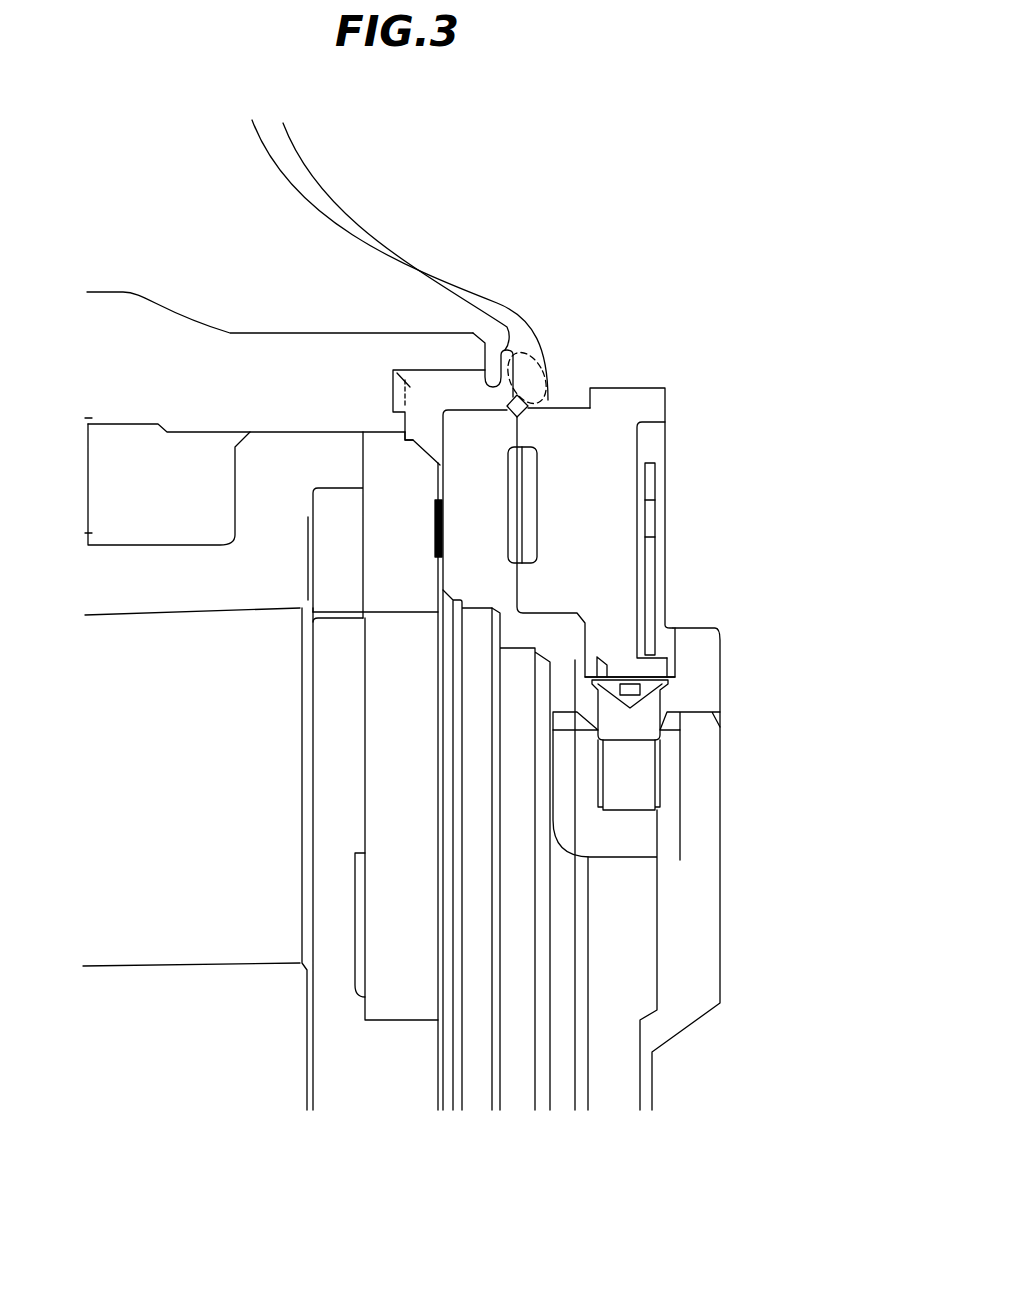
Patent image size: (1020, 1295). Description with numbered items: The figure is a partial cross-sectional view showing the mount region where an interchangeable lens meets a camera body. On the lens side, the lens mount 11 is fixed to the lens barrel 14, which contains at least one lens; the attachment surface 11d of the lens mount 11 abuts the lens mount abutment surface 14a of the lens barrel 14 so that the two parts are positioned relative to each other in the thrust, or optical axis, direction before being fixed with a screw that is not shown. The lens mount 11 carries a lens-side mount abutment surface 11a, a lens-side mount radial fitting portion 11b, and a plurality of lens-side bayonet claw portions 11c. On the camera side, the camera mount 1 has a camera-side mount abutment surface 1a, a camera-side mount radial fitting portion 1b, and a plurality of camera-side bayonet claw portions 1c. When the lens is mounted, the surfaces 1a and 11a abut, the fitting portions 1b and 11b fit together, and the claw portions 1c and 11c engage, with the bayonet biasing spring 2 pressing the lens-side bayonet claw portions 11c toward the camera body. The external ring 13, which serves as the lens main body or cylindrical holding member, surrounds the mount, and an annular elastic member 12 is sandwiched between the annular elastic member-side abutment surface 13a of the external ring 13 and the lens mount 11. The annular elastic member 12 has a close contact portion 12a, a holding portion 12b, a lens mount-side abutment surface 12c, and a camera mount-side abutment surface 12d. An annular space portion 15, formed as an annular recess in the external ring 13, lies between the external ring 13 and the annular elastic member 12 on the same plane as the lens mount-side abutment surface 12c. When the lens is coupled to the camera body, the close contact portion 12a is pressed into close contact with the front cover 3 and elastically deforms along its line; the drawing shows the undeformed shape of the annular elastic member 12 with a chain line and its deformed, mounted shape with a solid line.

The camera mount 1 is at (618, 396).
The camera-side mount abutment surface 1a is at (548, 600).
The camera-side mount radial fitting portion 1b is at (568, 617).
The camera-side bayonet claw portions 1c is at (662, 648).
The bayonet biasing spring 2 is at (652, 481).
The front cover 3 is at (330, 222).
The lens mount 11 is at (493, 507).
The lens-side mount abutment surface 11a is at (515, 580).
The lens-side mount radial fitting portion 11b is at (530, 603).
The lens-side bayonet claw portions 11c is at (705, 669).
The attachment surface 11d is at (447, 445).
The annular elastic member 12 is at (513, 350).
The close contact portion 12a is at (548, 362).
The holding portion 12b is at (407, 432).
The lens mount-side abutment surface 12c is at (425, 420).
The camera mount-side abutment surface 12d is at (440, 400).
The external ring 13 is at (155, 333).
The annular elastic member-side abutment surface 13a is at (417, 442).
The lens barrel 14 is at (118, 567).
The lens mount abutment surface 14a is at (437, 642).
The annular space portion 15 is at (393, 370).